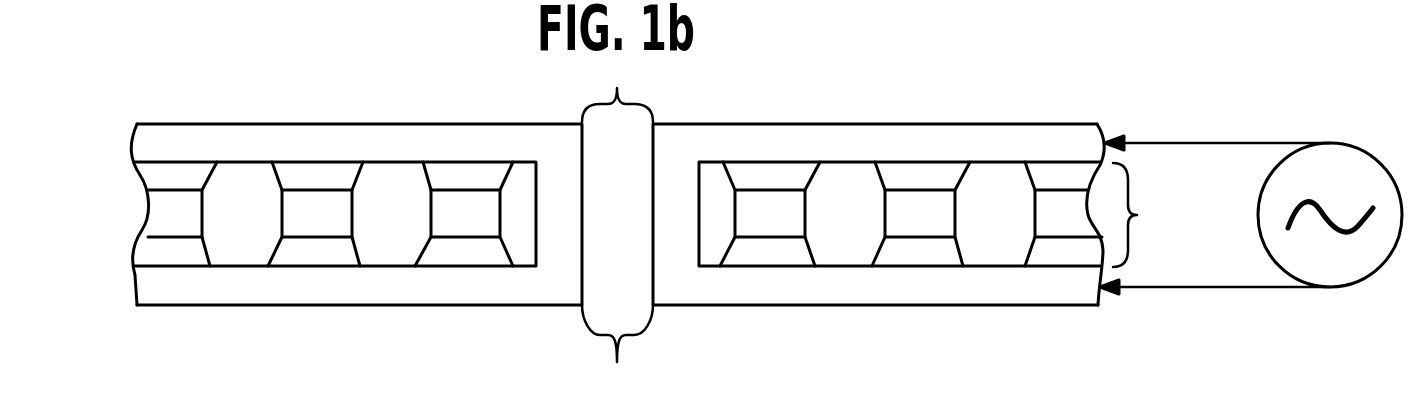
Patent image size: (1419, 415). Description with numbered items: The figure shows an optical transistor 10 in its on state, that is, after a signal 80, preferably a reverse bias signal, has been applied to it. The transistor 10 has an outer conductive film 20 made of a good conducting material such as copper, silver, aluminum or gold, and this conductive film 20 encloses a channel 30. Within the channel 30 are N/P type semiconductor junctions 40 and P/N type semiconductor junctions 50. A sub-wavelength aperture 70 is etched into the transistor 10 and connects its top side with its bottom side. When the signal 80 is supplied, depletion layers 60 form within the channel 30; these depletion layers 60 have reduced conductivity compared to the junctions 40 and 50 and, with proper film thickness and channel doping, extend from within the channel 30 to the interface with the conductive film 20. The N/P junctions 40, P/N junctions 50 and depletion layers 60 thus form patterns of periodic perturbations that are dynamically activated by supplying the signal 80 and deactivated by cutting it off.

The optical transistor 10 is at (238, 322).
The outer conductive film 20 is at (617, 263).
The channel 30 is at (1146, 215).
The N/P type semiconductor junctions 40 is at (788, 225).
The P/N type semiconductor junctions 50 is at (832, 228).
The depletion layers 60 is at (463, 170).
The sub-wavelength aperture 70 is at (617, 87).
The signal 80 is at (1333, 168).